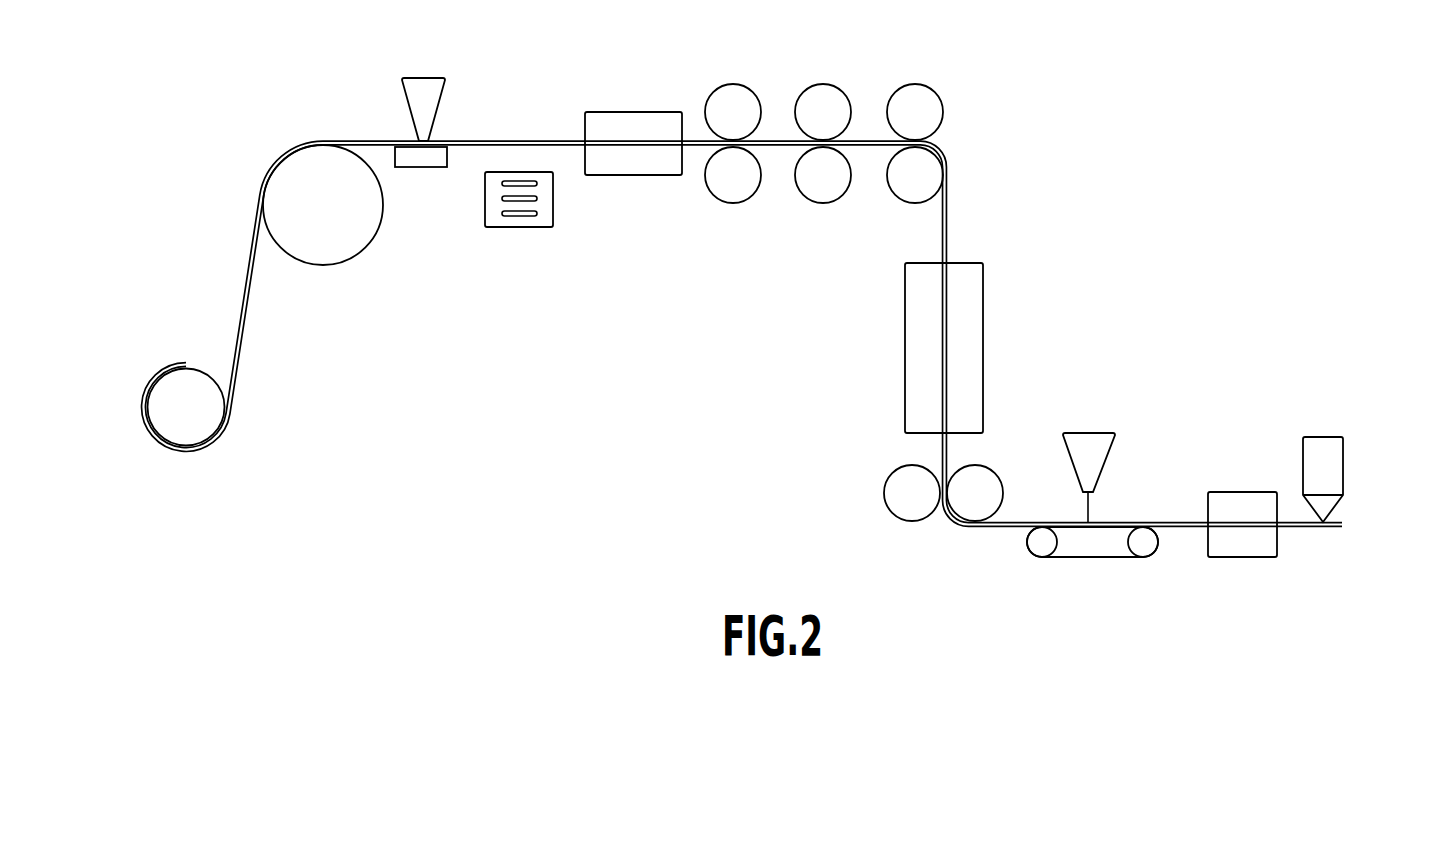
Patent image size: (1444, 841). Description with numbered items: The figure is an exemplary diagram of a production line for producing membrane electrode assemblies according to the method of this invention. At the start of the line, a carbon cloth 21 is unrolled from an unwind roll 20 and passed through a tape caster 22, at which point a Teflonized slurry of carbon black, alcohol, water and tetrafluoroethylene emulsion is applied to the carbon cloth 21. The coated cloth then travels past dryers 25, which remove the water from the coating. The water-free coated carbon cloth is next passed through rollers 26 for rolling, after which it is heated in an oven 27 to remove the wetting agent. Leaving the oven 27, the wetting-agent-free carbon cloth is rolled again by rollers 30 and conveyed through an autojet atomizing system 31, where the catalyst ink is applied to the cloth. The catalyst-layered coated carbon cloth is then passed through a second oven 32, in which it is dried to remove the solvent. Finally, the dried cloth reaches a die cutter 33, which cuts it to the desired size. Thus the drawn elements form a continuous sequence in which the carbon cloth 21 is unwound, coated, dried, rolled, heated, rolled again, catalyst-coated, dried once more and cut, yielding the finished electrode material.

The unwind roll 20 is at (183, 365).
The carbon cloth 21 is at (250, 302).
The tape caster 22 is at (447, 127).
The dryers 25 is at (597, 176).
The rollers 26 is at (803, 92).
The oven 27 is at (983, 303).
The rollers 30 is at (962, 510).
The autojet atomizing system 31 is at (1113, 492).
The oven 32 is at (1238, 492).
The die cutter 33 is at (1343, 458).